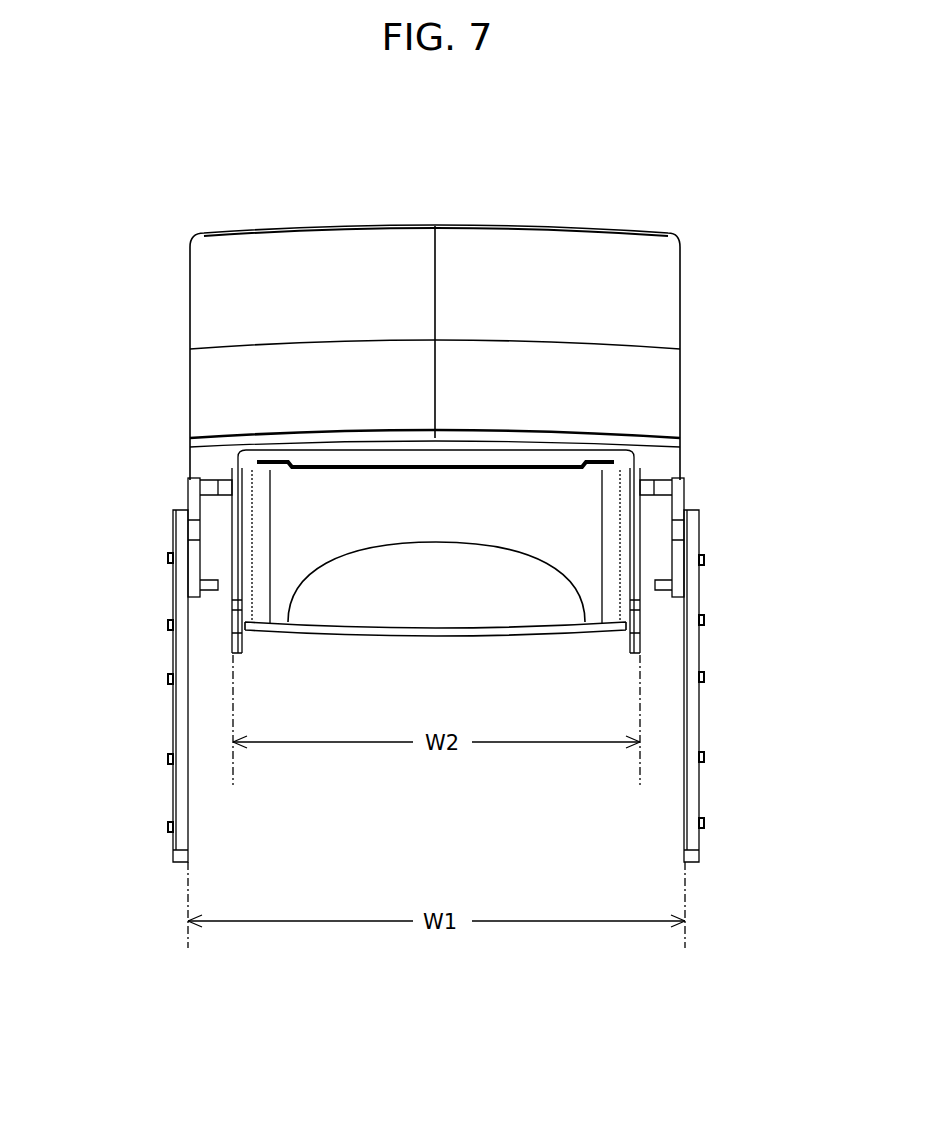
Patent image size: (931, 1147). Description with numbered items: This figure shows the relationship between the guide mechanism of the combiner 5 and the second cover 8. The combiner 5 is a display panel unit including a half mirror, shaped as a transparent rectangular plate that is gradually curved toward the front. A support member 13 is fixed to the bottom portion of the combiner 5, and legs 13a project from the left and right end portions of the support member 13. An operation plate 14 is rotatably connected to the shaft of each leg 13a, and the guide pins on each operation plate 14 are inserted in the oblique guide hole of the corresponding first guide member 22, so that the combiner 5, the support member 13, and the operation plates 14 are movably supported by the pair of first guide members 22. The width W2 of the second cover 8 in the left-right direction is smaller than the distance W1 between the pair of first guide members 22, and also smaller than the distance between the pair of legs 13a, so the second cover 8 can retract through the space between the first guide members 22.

The combiner 5 is at (612, 234).
The support member 13 is at (665, 462).
The leg 13a is at (191, 583).
The operation plate 14 is at (186, 497).
The second cover 8 is at (592, 600).
The first guide member 22 is at (180, 792).